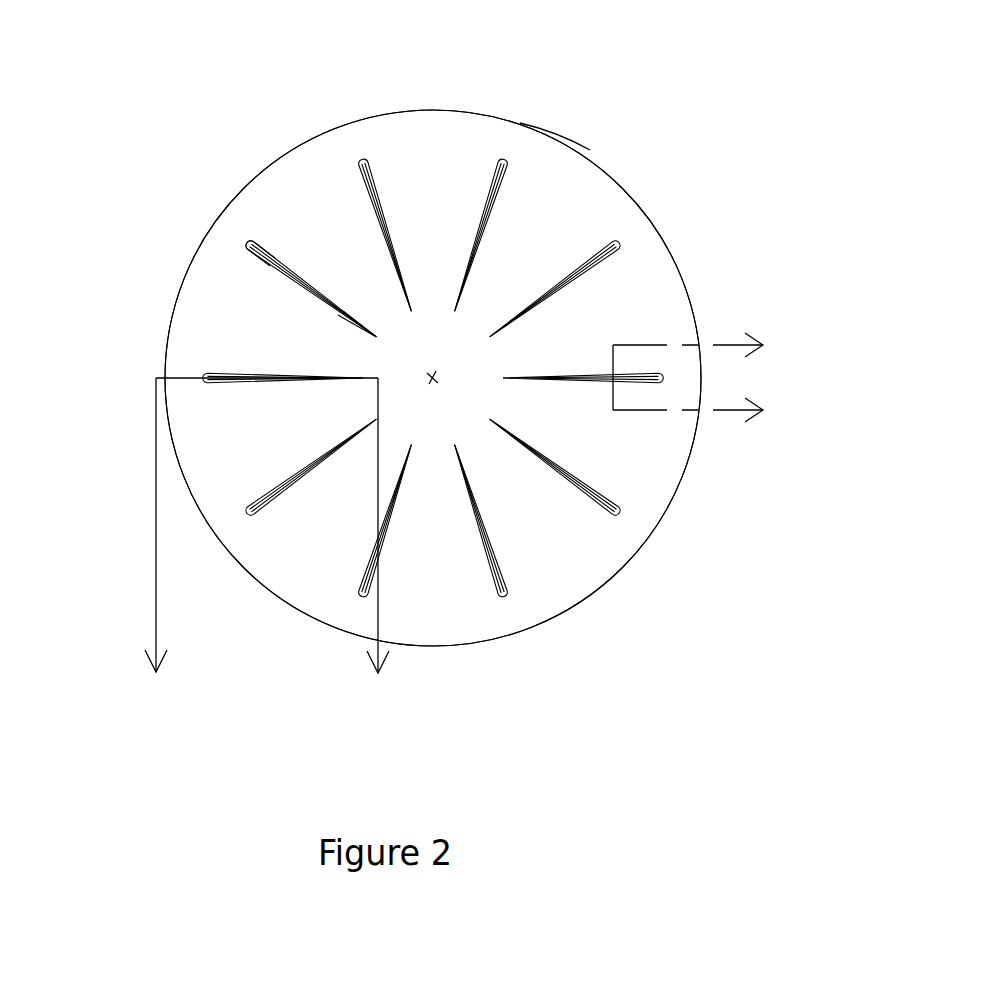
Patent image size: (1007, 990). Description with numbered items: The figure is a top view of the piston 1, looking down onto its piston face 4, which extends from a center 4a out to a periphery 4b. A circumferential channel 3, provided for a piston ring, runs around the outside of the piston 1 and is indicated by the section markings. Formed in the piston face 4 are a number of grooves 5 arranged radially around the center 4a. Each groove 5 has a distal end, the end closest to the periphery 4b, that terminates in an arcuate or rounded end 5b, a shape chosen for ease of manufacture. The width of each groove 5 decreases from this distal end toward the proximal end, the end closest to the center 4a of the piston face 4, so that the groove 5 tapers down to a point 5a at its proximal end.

The piston 1 is at (645, 557).
The circumferential channel 3 is at (265, 549).
The piston face 4 is at (434, 378).
The center 4a is at (570, 262).
The periphery 4b is at (602, 79).
The groove 5 is at (433, 331).
The proximal end 5a is at (336, 196).
The arcuate or rounded end 5b is at (207, 223).